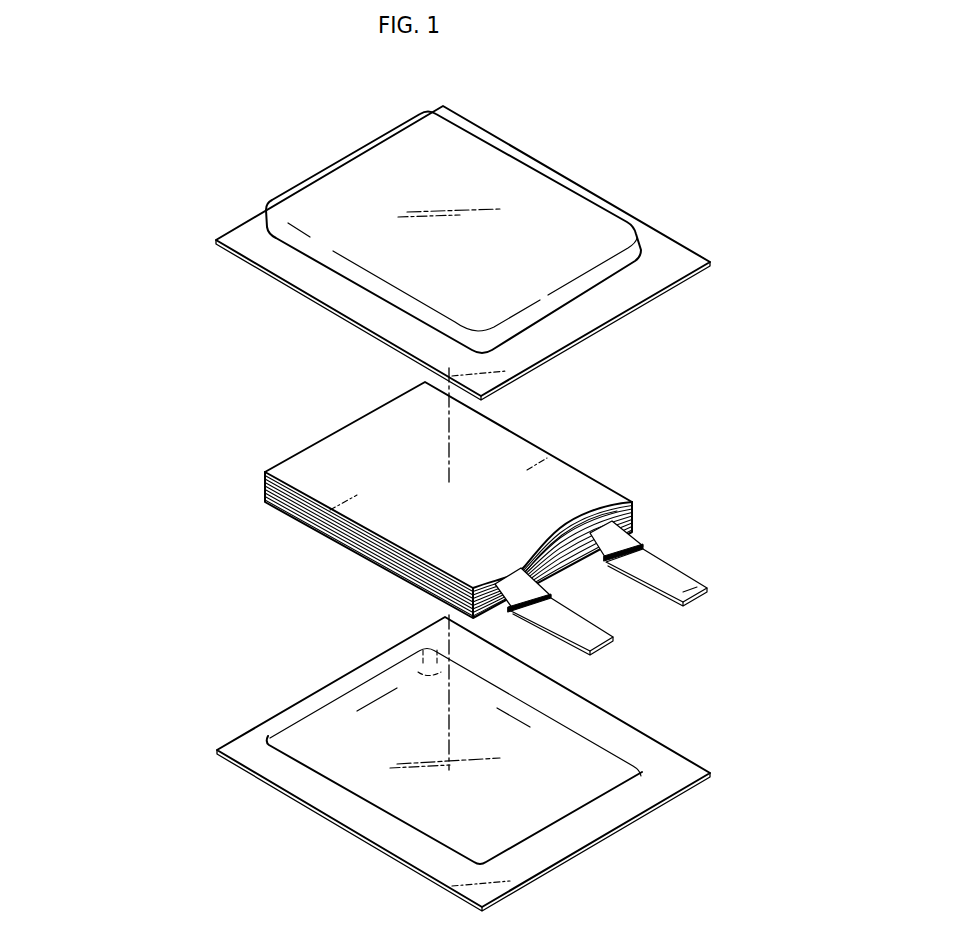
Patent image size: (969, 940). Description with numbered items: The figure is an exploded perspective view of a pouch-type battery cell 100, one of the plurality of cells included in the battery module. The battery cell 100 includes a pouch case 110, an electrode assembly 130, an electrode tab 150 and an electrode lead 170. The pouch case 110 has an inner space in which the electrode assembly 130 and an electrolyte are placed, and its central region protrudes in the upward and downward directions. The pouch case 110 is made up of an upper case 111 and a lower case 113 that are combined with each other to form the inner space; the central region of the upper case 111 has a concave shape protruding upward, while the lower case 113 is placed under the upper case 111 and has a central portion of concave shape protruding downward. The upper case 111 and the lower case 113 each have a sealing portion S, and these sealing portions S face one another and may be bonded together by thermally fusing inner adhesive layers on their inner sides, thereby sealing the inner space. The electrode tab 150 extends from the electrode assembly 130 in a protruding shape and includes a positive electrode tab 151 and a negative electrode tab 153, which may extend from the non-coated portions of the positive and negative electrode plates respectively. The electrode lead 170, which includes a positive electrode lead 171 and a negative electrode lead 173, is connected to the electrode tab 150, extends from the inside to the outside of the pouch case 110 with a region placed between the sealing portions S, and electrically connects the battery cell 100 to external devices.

The battery cell 100 is at (203, 101).
The pouch case 110 is at (103, 412).
The upper case 111 is at (253, 243).
The lower case 113 is at (250, 762).
The electrode assembly 130 is at (573, 478).
The electrode tab 150 is at (697, 452).
The positive electrode tab 151 is at (612, 533).
The negative electrode tab 153 is at (613, 497).
The electrode lead 170 is at (781, 621).
The positive electrode lead 171 is at (703, 589).
The negative electrode lead 173 is at (593, 635).
The sealing portion S is at (665, 243).